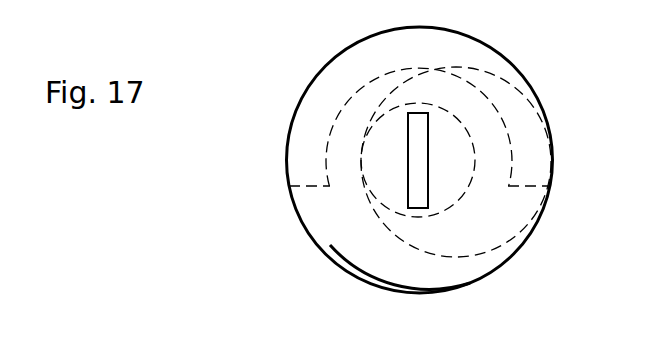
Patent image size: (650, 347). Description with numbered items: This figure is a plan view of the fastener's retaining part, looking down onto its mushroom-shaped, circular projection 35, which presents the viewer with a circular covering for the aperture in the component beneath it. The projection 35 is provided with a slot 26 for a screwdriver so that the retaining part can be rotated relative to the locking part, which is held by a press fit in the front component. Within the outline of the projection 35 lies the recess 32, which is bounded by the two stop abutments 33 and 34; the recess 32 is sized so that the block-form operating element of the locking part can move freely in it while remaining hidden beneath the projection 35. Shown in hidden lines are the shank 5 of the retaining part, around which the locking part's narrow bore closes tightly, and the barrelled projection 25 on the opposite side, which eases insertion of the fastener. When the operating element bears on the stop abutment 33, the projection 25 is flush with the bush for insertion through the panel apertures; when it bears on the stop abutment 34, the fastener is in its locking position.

The recess 32 is at (330, 79).
The projection 35 is at (367, 265).
The projection 25 is at (515, 208).
The shank 5 is at (465, 195).
The stop abutment 34 is at (308, 185).
The stop abutment 33 is at (527, 187).
The slot 26 is at (407, 193).